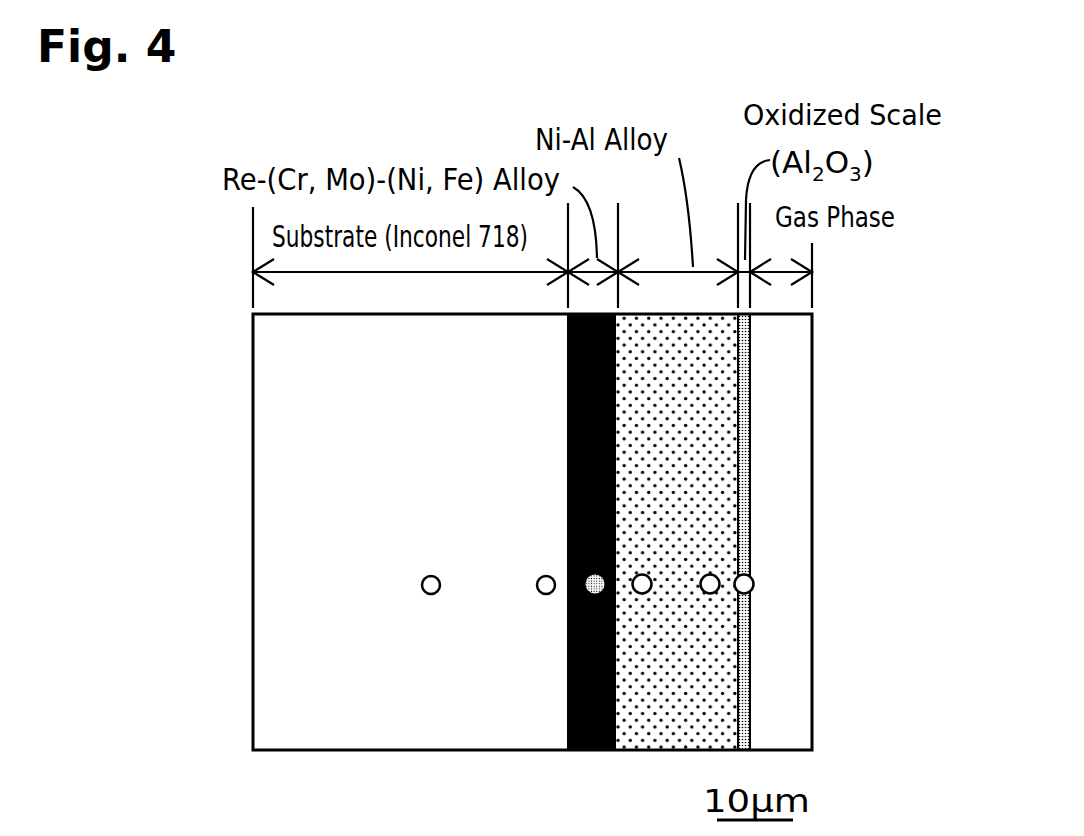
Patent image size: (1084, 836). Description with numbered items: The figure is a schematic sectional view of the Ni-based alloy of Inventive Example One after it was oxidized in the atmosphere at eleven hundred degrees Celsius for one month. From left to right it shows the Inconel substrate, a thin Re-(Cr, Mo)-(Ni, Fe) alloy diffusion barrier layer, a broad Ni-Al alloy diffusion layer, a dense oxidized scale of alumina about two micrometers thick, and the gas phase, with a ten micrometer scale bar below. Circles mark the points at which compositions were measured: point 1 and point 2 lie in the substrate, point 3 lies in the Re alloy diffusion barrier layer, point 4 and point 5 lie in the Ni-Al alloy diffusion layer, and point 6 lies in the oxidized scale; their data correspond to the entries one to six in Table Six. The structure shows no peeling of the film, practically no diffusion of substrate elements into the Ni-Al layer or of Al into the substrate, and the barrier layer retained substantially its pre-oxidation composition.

The point 1 is at (426, 683).
The point 2 is at (544, 683).
The point 3 is at (594, 683).
The point 4 is at (641, 683).
The point 5 is at (702, 683).
The point 6 is at (744, 683).